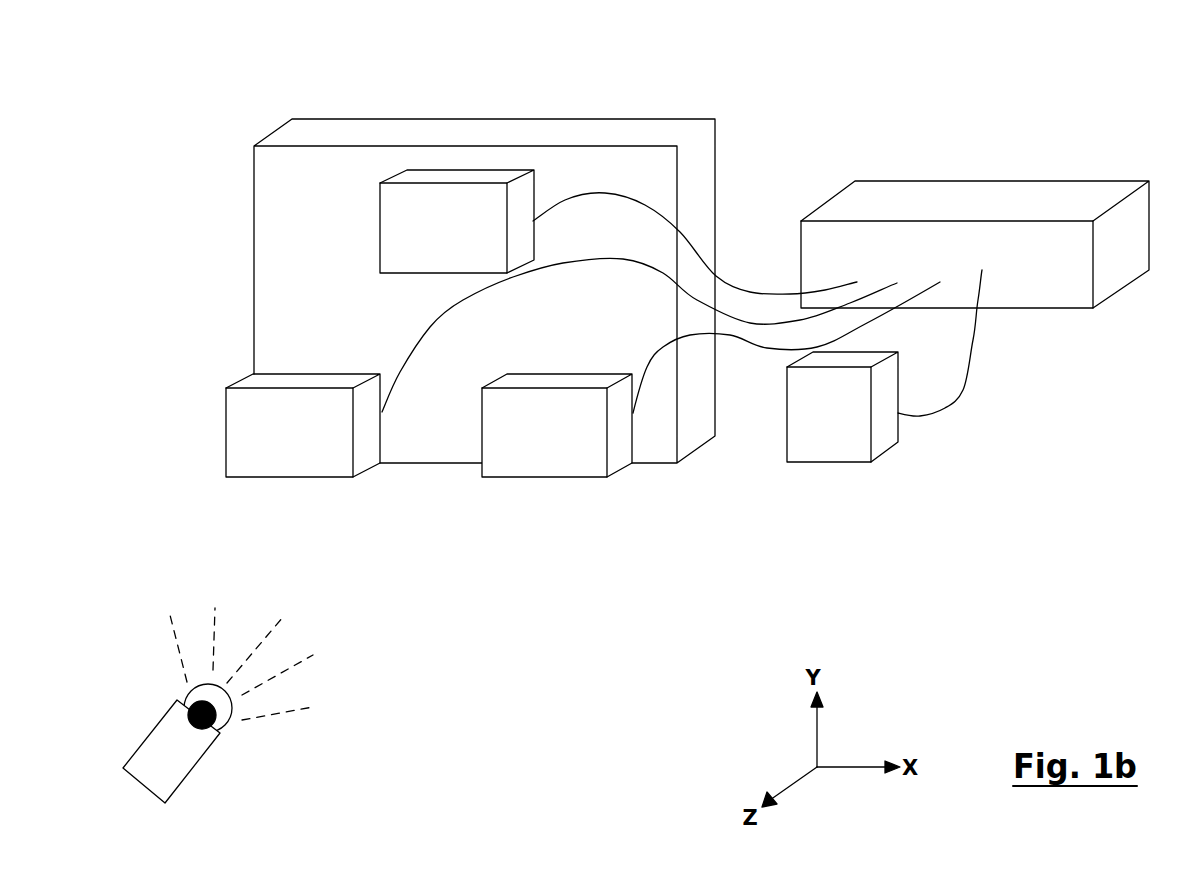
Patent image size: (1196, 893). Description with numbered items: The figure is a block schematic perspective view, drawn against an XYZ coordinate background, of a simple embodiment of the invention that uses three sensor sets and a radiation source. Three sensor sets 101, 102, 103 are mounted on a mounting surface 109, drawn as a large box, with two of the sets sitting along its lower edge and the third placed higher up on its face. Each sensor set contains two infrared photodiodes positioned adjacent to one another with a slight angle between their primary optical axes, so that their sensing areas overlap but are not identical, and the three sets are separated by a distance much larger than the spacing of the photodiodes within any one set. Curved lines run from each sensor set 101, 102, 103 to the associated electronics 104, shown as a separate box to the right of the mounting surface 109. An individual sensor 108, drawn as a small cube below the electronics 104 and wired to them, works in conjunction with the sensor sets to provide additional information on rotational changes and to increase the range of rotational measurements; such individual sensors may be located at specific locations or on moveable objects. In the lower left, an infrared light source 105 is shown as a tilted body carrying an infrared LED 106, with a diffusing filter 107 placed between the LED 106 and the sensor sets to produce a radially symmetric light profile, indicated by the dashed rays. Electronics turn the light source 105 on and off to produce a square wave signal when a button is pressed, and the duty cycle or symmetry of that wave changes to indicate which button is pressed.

The sensor set 101 is at (283, 488).
The sensor set 102 is at (365, 222).
The sensor set 103 is at (537, 488).
The electronics 104 is at (1022, 168).
The infrared light source 105 is at (122, 741).
The infrared LED 106 is at (187, 707).
The diffusing filter 107 is at (233, 720).
The individual sensor 108 is at (829, 475).
The mounting surface 109 is at (605, 107).